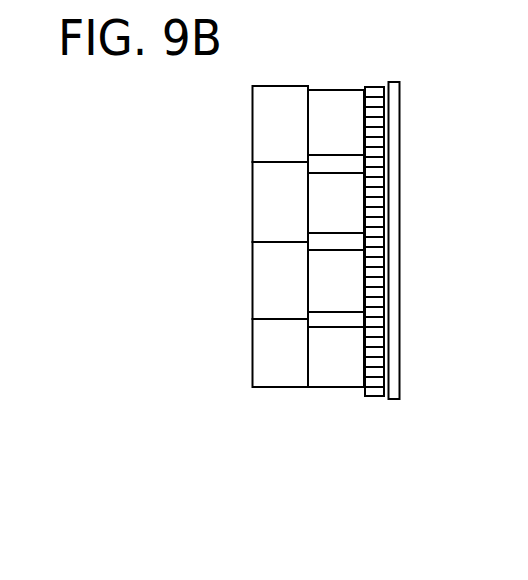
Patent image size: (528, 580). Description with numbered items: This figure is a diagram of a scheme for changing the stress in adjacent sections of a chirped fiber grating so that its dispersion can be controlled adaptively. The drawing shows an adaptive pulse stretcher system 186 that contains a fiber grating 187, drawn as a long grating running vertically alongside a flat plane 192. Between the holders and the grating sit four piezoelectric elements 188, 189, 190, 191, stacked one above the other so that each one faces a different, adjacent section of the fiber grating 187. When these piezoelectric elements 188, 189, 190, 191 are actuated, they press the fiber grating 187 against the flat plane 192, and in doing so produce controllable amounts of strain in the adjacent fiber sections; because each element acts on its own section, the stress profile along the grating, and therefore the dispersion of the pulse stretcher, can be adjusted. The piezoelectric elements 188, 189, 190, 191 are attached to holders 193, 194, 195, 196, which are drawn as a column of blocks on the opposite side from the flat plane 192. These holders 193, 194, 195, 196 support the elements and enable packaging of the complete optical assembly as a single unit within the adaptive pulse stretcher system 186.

The adaptive pulse stretcher system 186 is at (448, 385).
The fiber grating 187 is at (375, 398).
The piezoelectric element 188 is at (343, 98).
The piezoelectric element 189 is at (315, 186).
The piezoelectric element 190 is at (315, 263).
The piezoelectric element 191 is at (333, 366).
The flat plane 192 is at (400, 158).
The holder 193 is at (262, 136).
The holder 194 is at (262, 222).
The holder 195 is at (262, 302).
The holder 196 is at (262, 365).